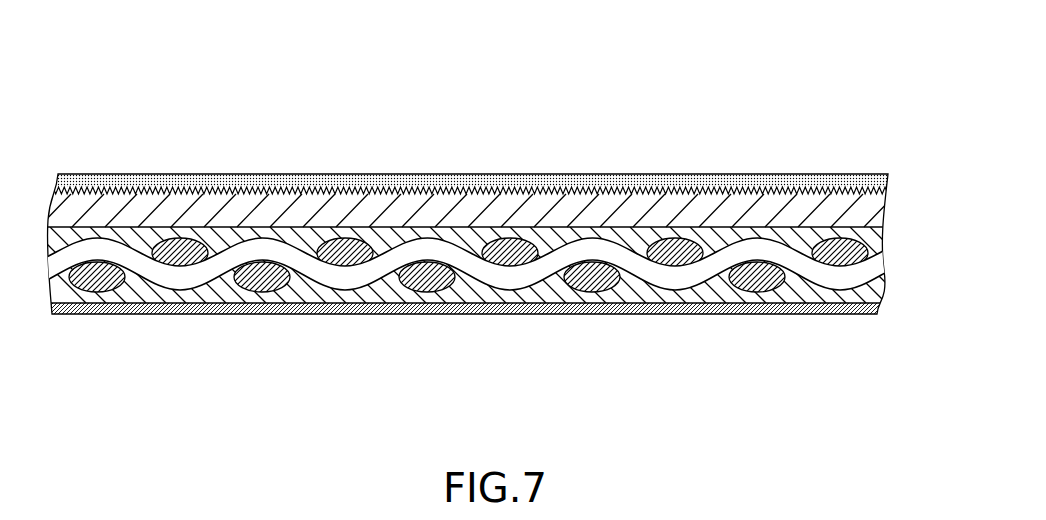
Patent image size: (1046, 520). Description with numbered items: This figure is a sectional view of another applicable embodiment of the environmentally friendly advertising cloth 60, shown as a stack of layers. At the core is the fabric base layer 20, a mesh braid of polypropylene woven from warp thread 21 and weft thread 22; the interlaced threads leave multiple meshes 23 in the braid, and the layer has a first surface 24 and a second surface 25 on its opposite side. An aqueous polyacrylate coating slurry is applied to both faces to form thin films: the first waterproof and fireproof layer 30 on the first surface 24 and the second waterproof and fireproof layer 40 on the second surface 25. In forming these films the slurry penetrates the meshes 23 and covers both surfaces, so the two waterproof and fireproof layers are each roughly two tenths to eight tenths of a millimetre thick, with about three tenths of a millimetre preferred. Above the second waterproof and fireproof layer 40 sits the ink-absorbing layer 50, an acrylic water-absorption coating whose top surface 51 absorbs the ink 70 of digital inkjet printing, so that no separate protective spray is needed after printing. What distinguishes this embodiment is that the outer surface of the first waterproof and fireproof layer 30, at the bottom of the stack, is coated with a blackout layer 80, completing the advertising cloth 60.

The fabric base layer 20 is at (502, 222).
The warp thread 21 is at (502, 248).
The weft thread 22 is at (510, 191).
The meshes 23 is at (645, 252).
The first surface 24 is at (503, 290).
The second surface 25 is at (515, 238).
The first waterproof and fireproof layer 30 is at (460, 296).
The second waterproof and fireproof layer 40 is at (462, 235).
The ink-absorbing layer 50 is at (400, 210).
The top surface 51 is at (312, 196).
The environmentally friendly advertising cloth 60 is at (905, 192).
The ink 70 is at (203, 174).
The blackout layer 80 is at (304, 314).